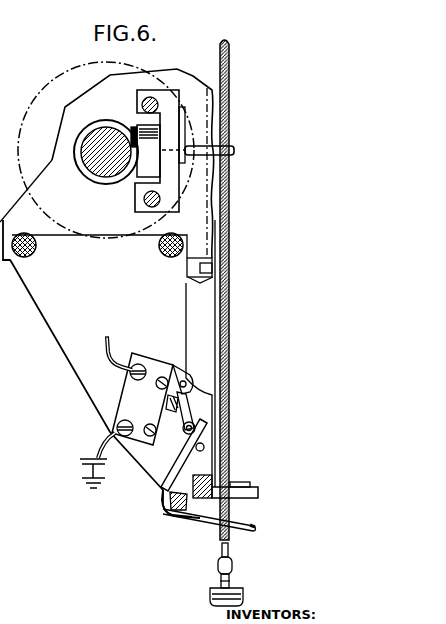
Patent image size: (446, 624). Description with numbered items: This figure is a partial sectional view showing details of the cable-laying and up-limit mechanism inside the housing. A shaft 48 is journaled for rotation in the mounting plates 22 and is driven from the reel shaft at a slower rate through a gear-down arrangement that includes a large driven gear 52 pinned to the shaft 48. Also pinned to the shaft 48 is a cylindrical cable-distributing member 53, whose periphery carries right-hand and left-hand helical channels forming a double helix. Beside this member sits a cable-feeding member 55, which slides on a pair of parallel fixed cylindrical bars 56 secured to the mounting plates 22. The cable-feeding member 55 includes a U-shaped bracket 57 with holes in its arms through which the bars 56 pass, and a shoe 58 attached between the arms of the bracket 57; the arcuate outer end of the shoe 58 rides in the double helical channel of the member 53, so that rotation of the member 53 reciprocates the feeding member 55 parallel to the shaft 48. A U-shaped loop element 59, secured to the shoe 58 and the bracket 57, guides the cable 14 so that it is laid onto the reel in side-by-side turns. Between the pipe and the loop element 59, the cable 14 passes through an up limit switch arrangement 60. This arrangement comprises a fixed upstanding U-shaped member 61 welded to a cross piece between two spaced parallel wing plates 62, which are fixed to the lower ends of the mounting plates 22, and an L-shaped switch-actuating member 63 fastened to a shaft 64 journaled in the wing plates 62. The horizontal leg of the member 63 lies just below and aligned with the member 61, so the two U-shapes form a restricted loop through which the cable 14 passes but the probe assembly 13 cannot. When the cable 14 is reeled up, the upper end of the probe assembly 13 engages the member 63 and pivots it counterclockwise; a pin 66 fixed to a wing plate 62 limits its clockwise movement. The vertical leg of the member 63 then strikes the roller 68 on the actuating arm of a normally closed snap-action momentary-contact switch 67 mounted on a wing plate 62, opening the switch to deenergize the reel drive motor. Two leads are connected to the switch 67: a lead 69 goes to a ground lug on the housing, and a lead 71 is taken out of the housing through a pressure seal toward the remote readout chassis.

The probe assembly 13 is at (212, 597).
The cable 14 is at (231, 308).
The mounting plates 22 is at (29, 191).
The shaft 48 is at (96, 145).
The large driven gear 52 is at (46, 86).
The cable-distributing member 53 is at (95, 171).
The cable-feeding member 55 is at (172, 201).
The fixed cylindrical bars 56 is at (141, 98).
The U-shaped bracket 57 is at (173, 90).
The shoe 58 is at (136, 173).
The U-shaped loop element 59 is at (235, 149).
The up limit switch arrangement 60 is at (255, 510).
The fixed upstanding U-shaped member 61 is at (243, 490).
The wing plates 62 is at (90, 363).
The switch-actuating member 63 is at (252, 531).
The shaft 64 is at (169, 512).
The pin 66 is at (204, 447).
The snap-action momentary-contact switch 67 is at (150, 411).
The roller 68 is at (186, 429).
The lead 69 is at (108, 432).
The lead 71 is at (113, 340).